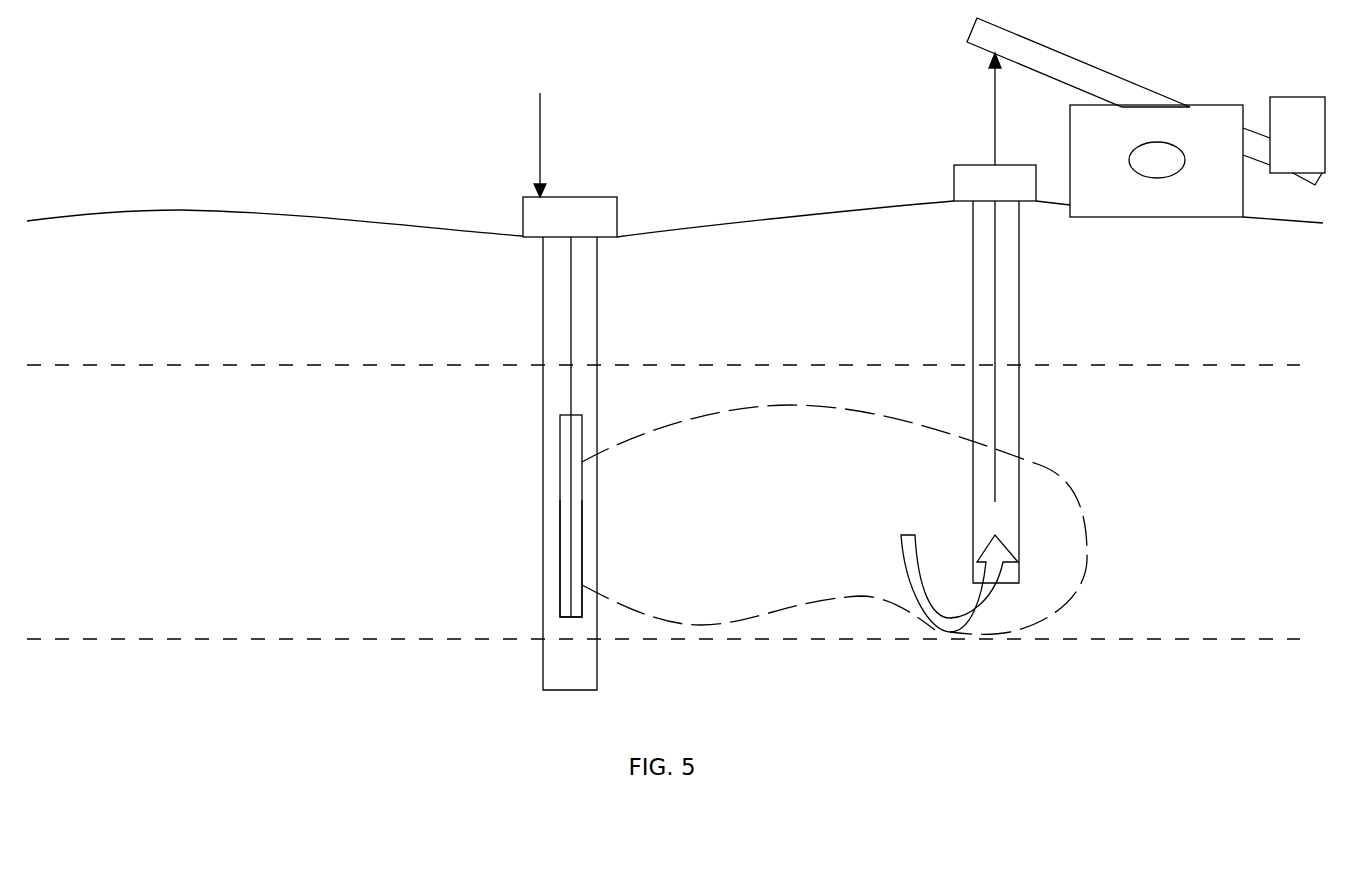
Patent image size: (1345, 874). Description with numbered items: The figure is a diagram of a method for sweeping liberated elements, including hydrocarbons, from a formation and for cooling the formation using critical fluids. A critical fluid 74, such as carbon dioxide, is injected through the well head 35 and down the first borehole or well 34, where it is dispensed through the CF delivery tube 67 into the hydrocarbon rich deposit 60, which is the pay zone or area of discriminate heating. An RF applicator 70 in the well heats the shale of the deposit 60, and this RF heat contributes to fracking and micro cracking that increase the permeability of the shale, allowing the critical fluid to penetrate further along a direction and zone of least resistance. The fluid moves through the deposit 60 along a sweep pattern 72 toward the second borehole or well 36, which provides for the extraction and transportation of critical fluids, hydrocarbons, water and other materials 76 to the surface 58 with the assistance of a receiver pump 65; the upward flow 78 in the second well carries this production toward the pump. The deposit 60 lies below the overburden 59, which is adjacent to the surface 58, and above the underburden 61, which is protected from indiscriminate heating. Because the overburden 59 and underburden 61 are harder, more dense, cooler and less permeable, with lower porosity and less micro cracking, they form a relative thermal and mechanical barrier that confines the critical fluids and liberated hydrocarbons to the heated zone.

The borehole or well 34 is at (597, 305).
The well head 35 is at (580, 197).
The second borehole or well 36 is at (1019, 305).
The surface 58 is at (215, 212).
The overburden 59 is at (161, 340).
The hydrocarbon rich deposit 60 is at (159, 445).
The underburden 61 is at (162, 708).
The receiver pump 65 is at (1155, 55).
The CF delivery tube 67 is at (571, 446).
The RF applicator 70 is at (562, 502).
The sweep pattern 72 is at (782, 515).
The critical fluid (CF) 74 is at (540, 143).
The critical fluids, hydrocarbons, water and other materials 76 is at (905, 566).
The production flow arrow 78 is at (995, 113).